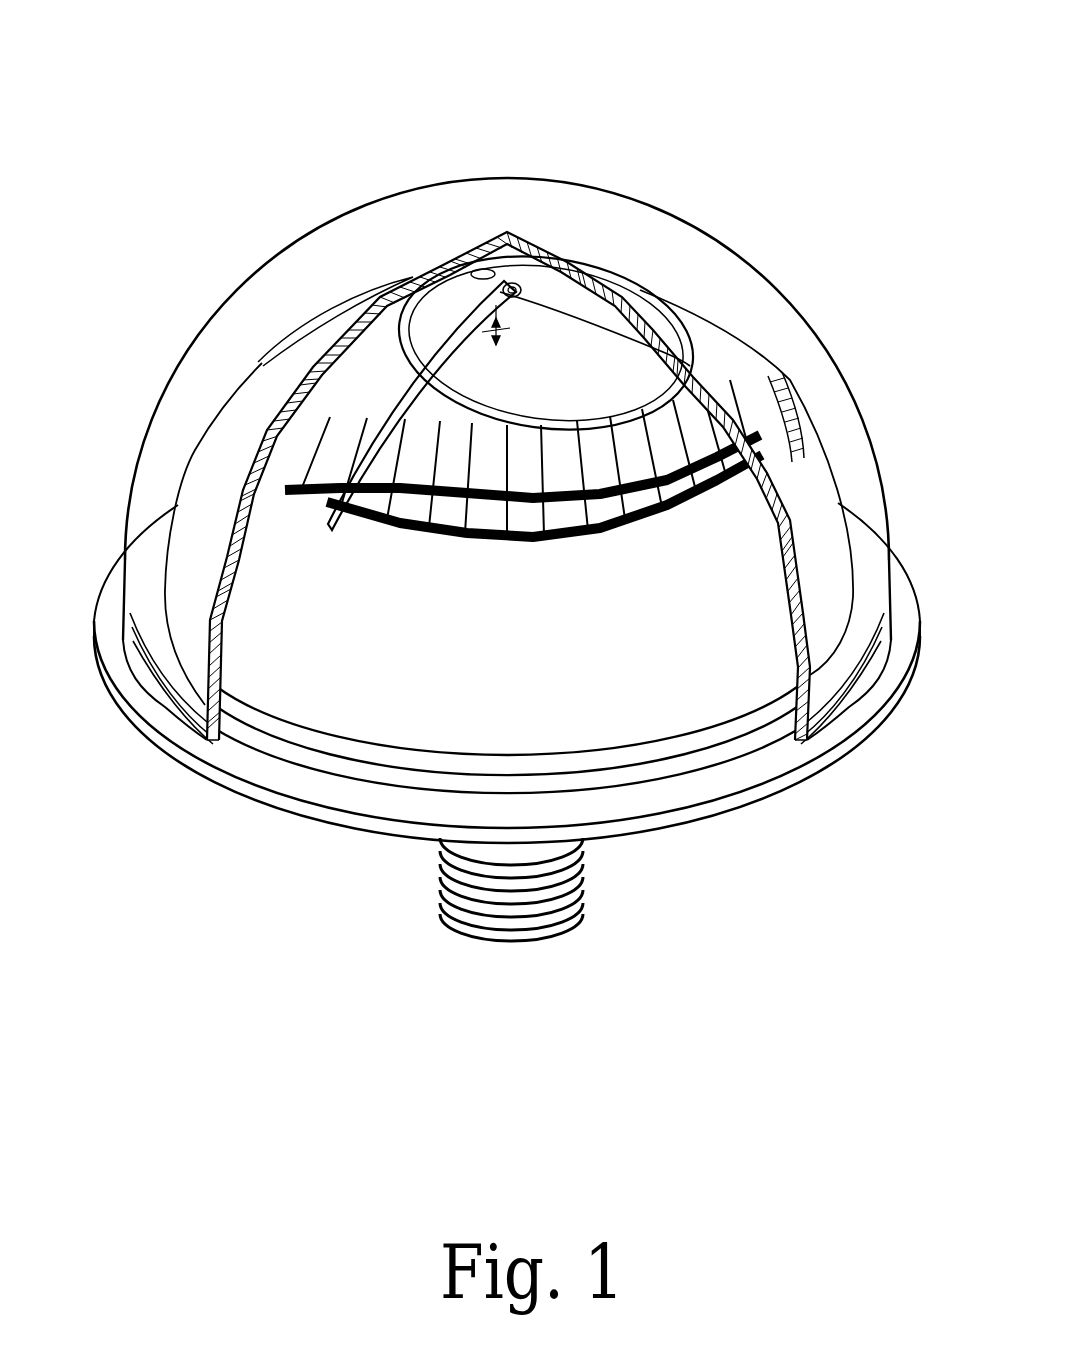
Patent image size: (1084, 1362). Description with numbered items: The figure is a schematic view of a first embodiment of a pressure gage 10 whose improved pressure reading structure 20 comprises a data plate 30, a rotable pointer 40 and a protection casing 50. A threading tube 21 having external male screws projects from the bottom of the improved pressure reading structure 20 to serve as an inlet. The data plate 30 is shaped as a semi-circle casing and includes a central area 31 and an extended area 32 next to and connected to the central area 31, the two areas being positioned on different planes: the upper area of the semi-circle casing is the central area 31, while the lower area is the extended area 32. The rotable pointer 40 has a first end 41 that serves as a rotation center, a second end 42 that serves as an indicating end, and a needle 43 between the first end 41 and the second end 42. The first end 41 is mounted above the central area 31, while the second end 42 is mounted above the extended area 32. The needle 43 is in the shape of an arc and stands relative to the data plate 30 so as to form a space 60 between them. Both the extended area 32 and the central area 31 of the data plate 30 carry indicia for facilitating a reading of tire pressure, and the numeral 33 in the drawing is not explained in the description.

The pressure gage 10 is at (405, 870).
The improved pressure reading structure 20 is at (583, 91).
The threading tube 21 is at (518, 941).
The data plate 30 is at (790, 740).
The central area 31 is at (637, 287).
The extended area 32 is at (690, 690).
The scale 33 is at (570, 533).
The rotable pointer 40 is at (440, 323).
The first end 41 is at (493, 258).
The second end 42 is at (327, 523).
The needle 43 is at (262, 365).
The protection casing 50 is at (133, 488).
The space 60 is at (593, 280).